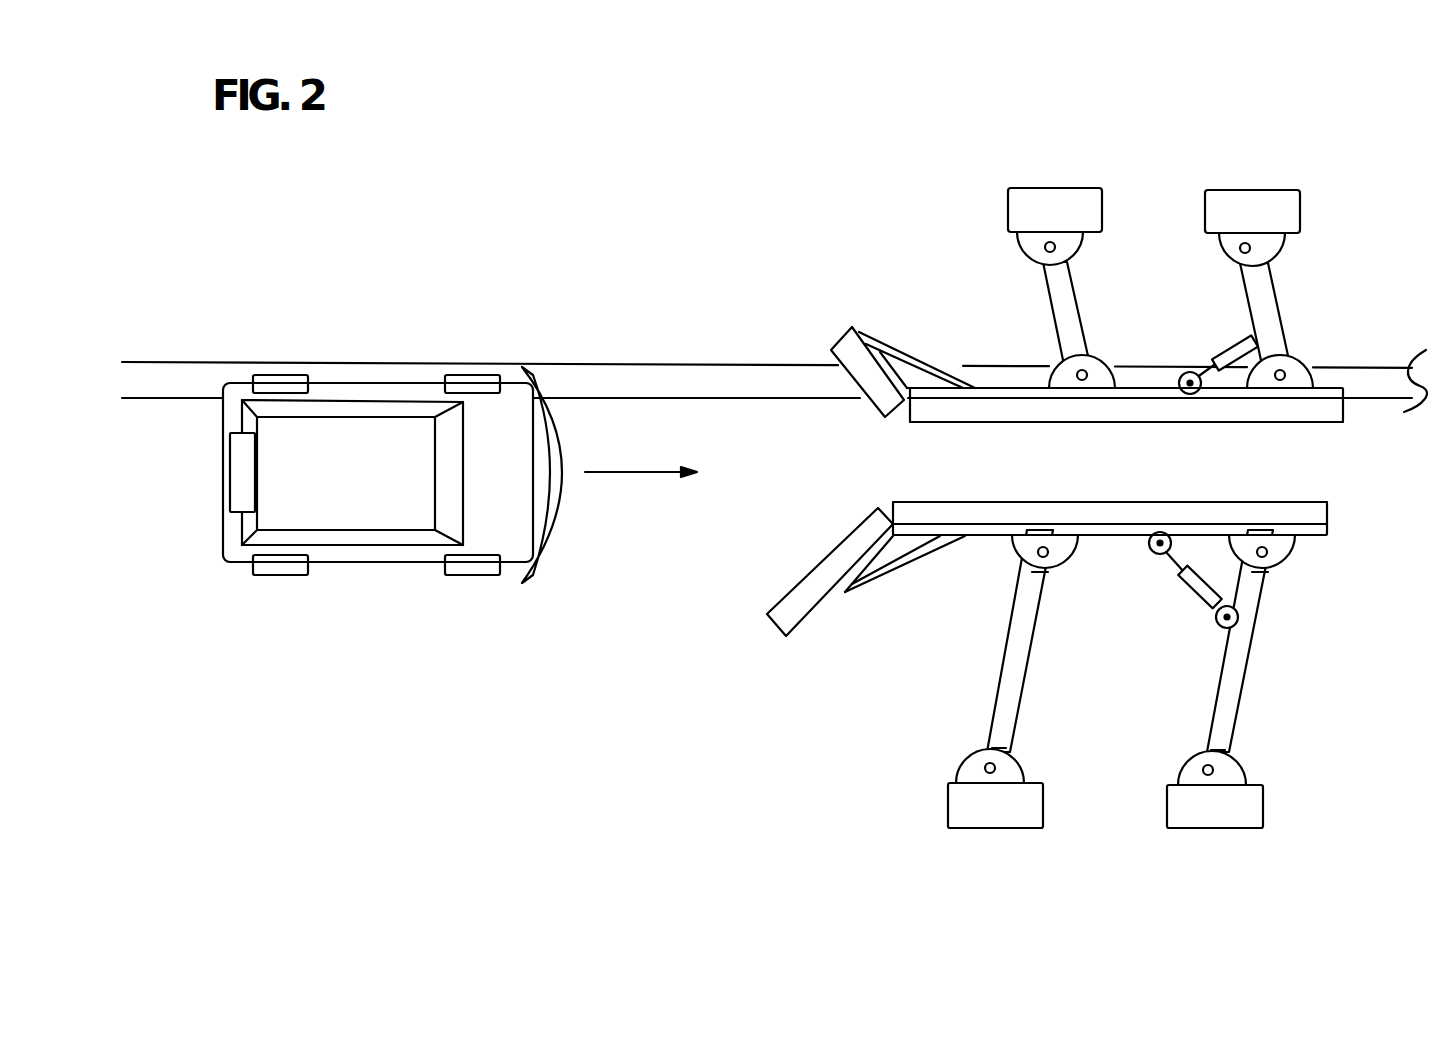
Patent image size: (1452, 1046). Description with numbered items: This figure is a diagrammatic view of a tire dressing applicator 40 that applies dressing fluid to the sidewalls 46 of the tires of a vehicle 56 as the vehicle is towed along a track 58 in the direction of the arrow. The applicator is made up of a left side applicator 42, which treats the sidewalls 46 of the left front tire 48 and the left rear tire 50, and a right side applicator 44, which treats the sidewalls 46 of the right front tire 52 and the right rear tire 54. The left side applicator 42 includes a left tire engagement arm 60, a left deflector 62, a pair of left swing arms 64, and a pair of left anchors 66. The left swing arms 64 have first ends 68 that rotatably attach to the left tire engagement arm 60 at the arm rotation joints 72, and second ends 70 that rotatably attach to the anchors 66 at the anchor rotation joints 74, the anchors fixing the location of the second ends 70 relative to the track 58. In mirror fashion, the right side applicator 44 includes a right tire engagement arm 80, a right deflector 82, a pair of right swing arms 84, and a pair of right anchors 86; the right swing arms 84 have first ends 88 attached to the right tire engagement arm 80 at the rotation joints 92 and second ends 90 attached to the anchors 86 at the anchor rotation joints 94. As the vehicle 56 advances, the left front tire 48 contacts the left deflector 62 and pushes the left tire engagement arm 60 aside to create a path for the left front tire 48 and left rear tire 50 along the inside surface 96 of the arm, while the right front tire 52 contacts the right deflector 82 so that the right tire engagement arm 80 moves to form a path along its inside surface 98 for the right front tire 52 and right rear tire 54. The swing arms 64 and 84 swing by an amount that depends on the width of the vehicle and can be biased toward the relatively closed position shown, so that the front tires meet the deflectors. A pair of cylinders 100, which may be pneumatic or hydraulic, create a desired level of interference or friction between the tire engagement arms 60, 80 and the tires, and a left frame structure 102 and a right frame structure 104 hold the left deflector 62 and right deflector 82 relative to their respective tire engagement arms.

The tire dressing applicator 40 is at (858, 177).
The left side applicator 42 is at (1382, 194).
The right side applicator 44 is at (1352, 731).
The sidewalls 46 is at (373, 473).
The left front tire 48 is at (455, 378).
The left rear tire 50 is at (262, 376).
The right front tire 52 is at (448, 568).
The right rear tire 54 is at (258, 566).
The vehicle 56 is at (327, 492).
The track 58 is at (653, 382).
The left tire engagement arm 60 is at (1118, 413).
The left deflector 62 is at (832, 350).
The left swing arms 64 is at (1072, 308).
The left anchors 66 is at (1037, 197).
The first ends 68 is at (1078, 340).
The second ends 70 is at (1068, 275).
The arm rotation joints 72 is at (1100, 368).
The anchor rotation joints 74 is at (1017, 240).
The right tire engagement arm 80 is at (1220, 513).
The right deflector 82 is at (817, 570).
The right swing arms 84 is at (1020, 655).
The right anchors 86 is at (1018, 817).
The first ends 88 is at (1032, 577).
The second ends 90 is at (997, 737).
The rotation joints 92 is at (1060, 547).
The anchor rotation joints 94 is at (1238, 772).
The inside surface 96 is at (1023, 422).
The inside surface 98 is at (1047, 503).
The cylinders 100 is at (1200, 592).
The left frame structure 102 is at (942, 392).
The right frame structure 104 is at (930, 533).